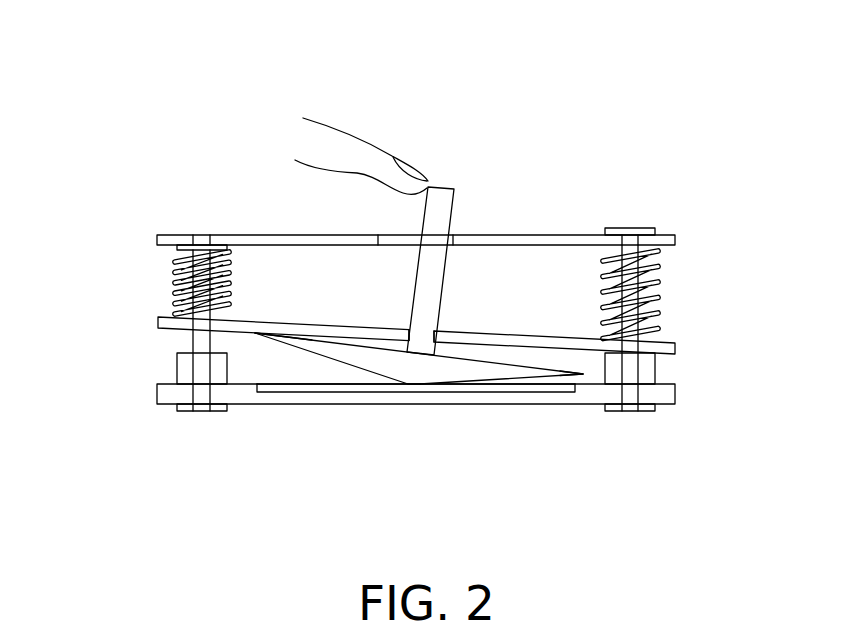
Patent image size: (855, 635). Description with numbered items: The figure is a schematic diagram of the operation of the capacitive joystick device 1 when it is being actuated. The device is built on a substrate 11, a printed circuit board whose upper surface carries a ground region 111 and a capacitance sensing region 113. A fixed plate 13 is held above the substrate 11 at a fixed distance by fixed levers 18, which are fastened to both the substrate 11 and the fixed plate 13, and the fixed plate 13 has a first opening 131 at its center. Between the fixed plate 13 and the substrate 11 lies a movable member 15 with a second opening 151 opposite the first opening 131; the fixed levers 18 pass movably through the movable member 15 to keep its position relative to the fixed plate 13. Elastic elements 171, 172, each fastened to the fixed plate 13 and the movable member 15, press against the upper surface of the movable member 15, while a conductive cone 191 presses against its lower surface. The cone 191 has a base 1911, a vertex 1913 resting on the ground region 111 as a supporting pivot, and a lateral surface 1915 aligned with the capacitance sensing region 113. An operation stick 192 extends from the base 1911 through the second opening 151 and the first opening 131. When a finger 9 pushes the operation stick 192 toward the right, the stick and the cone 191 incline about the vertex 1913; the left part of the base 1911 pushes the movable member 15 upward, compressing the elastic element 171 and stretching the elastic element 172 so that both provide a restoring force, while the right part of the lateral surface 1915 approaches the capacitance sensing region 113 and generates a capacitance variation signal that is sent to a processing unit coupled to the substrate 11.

The capacitive joystick device 1 is at (756, 105).
The finger 9 is at (340, 127).
The substrate 11 is at (163, 393).
The ground region 111 is at (430, 384).
The capacitance sensing region 113 is at (352, 388).
The fixed plate 13 is at (160, 240).
The first opening 131 is at (402, 240).
The movable member 15 is at (157, 323).
The second opening 151 is at (404, 334).
The elastic element 171 is at (175, 270).
The elastic element 172 is at (658, 282).
The fixed lever 18 is at (195, 345).
The cone 191 is at (488, 368).
The base 1911 is at (312, 340).
The vertex 1913 is at (415, 384).
The lateral surface 1915 is at (520, 378).
The operation stick 192 is at (438, 198).